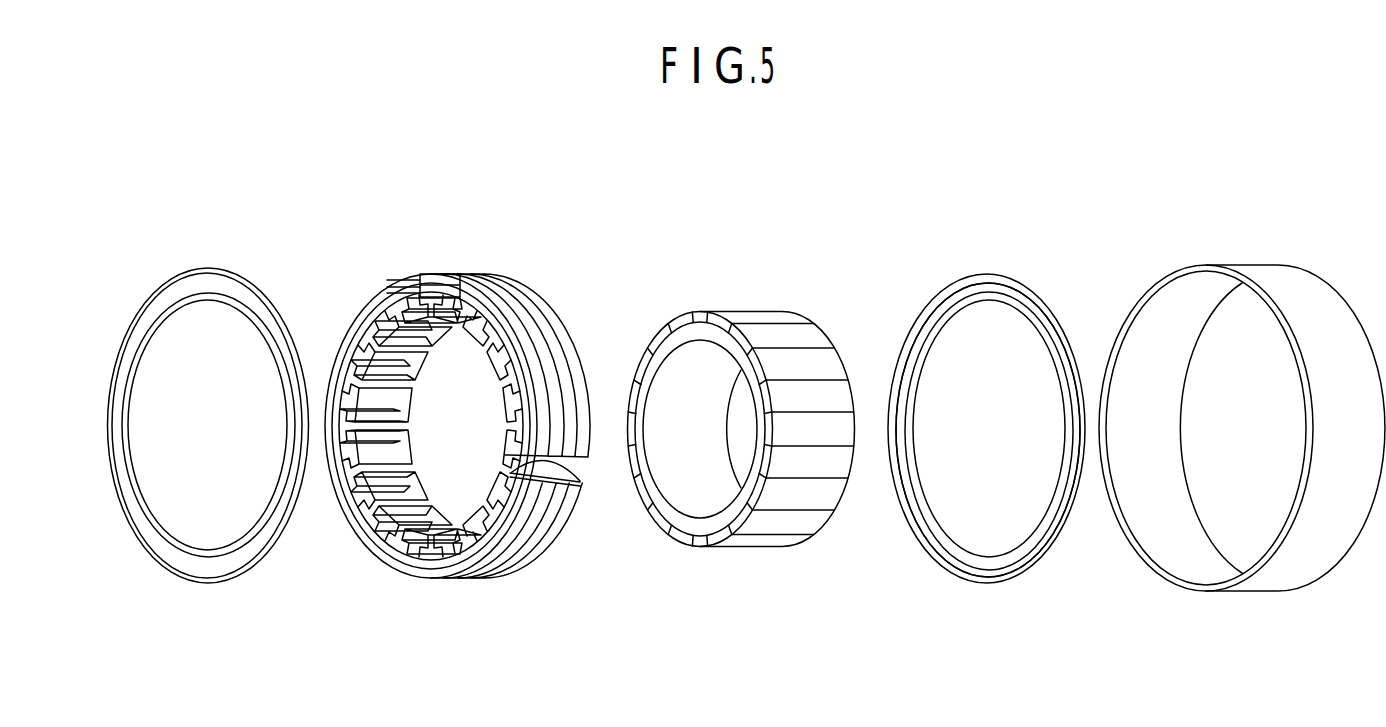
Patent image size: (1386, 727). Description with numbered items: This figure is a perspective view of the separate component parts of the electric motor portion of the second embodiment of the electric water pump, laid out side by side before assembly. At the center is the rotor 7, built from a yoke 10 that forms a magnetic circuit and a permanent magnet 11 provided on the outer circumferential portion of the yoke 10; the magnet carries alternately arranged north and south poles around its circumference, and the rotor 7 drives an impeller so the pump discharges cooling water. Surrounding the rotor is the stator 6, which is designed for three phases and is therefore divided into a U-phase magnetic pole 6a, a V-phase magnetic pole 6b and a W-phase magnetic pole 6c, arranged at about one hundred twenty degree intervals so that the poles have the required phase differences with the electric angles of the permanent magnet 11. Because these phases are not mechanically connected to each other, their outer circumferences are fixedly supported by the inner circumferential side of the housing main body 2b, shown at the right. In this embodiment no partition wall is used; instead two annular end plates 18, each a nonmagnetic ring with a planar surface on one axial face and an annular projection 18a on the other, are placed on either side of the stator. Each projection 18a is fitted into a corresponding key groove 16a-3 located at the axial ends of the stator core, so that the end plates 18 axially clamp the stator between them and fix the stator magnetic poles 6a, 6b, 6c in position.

The housing main body 2b is at (1253, 265).
The stator 6 is at (414, 587).
The U-phase magnetic pole 6a is at (547, 298).
The V-phase magnetic pole 6b is at (473, 589).
The W-phase magnetic pole 6c is at (356, 292).
The key groove 16a-3 is at (461, 300).
The rotor 7 is at (758, 558).
The yoke 10 is at (682, 517).
The permanent magnet 11 is at (757, 318).
The end plate 18 is at (202, 568).
The annular projection 18a is at (980, 285).